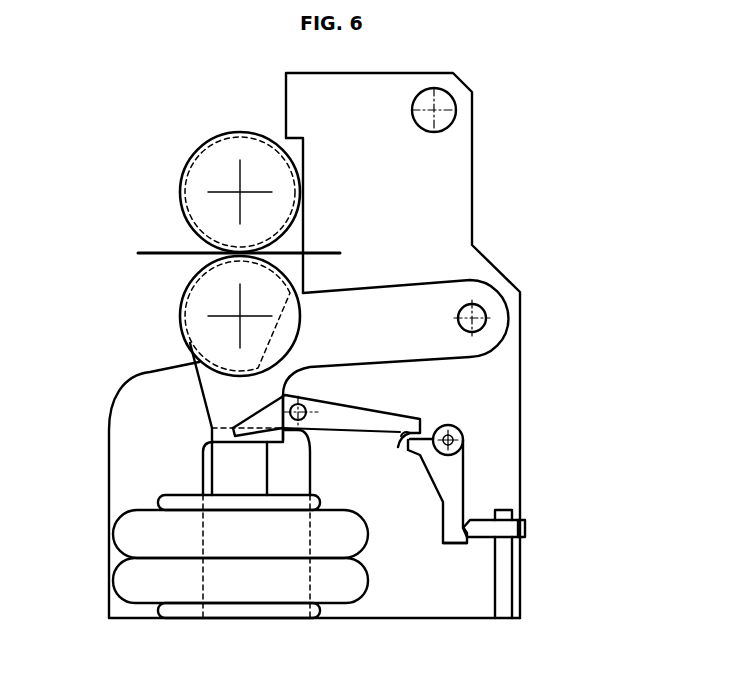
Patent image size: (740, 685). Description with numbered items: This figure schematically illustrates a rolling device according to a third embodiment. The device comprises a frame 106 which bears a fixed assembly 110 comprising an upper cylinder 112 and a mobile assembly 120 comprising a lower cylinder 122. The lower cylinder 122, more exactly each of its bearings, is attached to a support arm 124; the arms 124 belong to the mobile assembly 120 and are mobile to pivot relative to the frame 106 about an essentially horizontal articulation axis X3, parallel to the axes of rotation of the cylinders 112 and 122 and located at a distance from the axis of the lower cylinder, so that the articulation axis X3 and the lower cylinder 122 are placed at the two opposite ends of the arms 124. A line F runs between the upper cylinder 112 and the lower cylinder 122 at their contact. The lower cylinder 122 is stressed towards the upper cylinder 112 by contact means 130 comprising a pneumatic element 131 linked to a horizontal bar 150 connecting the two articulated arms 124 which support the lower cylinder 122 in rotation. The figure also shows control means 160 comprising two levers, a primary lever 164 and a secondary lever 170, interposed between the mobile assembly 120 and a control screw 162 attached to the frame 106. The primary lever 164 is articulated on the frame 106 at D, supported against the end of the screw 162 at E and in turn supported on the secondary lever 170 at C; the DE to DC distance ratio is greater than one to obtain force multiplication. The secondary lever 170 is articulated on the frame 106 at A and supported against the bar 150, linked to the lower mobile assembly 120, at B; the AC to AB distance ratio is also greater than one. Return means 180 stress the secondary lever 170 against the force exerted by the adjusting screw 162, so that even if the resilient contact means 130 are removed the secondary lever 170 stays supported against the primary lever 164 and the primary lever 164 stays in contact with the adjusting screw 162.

The frame 106 is at (302, 100).
The fixed assembly 110 is at (207, 183).
The upper cylinder 112 is at (203, 168).
The sheet conveying plane F is at (152, 253).
The mobile assembly 120 is at (196, 342).
The lower cylinder 122 is at (203, 340).
The support arm 124 is at (419, 342).
The articulation axis X3 is at (476, 313).
The contact means 130 is at (88, 538).
The pneumatic element 131 is at (128, 583).
The horizontal bar 150 is at (262, 445).
The support point B is at (237, 444).
The return means 180 is at (343, 440).
The secondary lever 170 is at (361, 423).
The articulation point A is at (302, 412).
The support point C is at (404, 437).
The control means 160 is at (506, 500).
The articulation point D is at (464, 438).
The primary lever 164 is at (465, 516).
The support point E is at (459, 538).
The control screw 162 is at (490, 532).